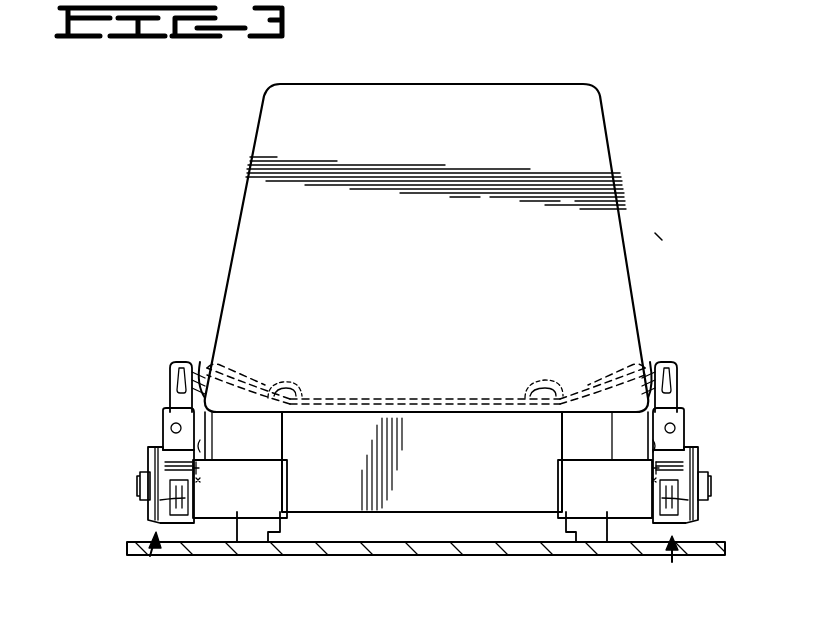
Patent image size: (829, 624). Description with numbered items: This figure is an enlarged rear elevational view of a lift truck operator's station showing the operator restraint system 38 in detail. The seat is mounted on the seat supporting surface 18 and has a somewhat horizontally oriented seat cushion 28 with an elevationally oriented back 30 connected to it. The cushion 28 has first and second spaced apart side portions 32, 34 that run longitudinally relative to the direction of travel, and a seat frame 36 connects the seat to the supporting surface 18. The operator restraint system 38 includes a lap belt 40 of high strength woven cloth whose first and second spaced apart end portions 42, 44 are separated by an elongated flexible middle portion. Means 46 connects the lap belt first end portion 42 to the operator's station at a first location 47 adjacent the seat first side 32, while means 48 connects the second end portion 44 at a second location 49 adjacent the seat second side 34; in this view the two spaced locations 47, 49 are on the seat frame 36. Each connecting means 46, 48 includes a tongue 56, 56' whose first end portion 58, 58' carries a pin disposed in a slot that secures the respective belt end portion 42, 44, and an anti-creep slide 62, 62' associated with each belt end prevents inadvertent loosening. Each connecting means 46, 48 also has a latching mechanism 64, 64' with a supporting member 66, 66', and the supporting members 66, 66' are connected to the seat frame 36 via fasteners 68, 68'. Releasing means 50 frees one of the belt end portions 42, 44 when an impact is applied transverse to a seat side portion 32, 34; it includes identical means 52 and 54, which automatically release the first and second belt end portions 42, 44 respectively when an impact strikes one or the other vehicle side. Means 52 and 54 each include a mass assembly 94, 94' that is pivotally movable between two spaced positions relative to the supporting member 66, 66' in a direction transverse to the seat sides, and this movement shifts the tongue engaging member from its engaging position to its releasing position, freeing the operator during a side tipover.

The seat supporting surface 18 is at (705, 545).
The seat cushion 28 is at (443, 464).
The seat back 30 is at (448, 136).
The first side portion of seat cushion 32 is at (208, 432).
The second side portion of seat cushion 34 is at (648, 428).
The seat frame 36 is at (290, 516).
The operator restraint system 38 is at (620, 57).
The lap belt 40 is at (615, 136).
The lap belt first end portion 42 is at (204, 362).
The lap belt second end portion 44 is at (652, 362).
The means for connecting lap belt first end portion 46 is at (148, 399).
The first location 47 is at (150, 555).
The means for connecting lap belt second end portion 48 is at (702, 407).
The second location 49 is at (689, 566).
The means for releasing lap belt end portion 50 is at (660, 242).
The means for automatically releasing lap belt first end portion 52 is at (117, 502).
The means for automatically releasing lap belt second end portion 54 is at (705, 426).
The tongue 56 is at (151, 387).
The tongue 56' is at (699, 386).
The tongue first end portion 58 is at (155, 361).
The tongue first end portion 58' is at (704, 366).
The anti-creep slide 62 is at (305, 373).
The anti-creep slide 62' is at (558, 369).
The latching mechanism 64 is at (229, 474).
The latching mechanism 64' is at (616, 473).
The supporting member 66 is at (239, 451).
The supporting member 66' is at (612, 451).
The fastener 68 is at (231, 493).
The fastener 68' is at (614, 493).
The mass assembly 94 is at (113, 466).
The mass assembly 94' is at (737, 477).